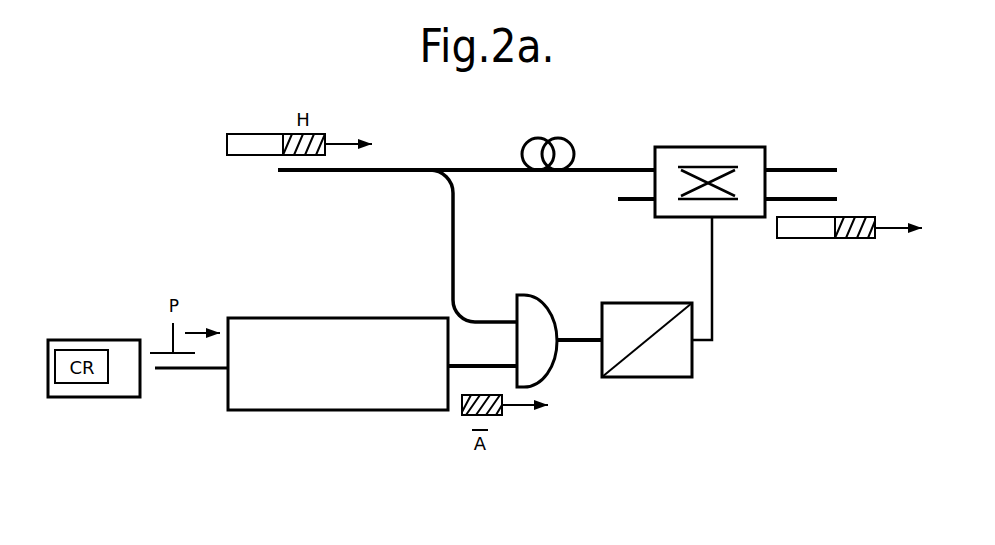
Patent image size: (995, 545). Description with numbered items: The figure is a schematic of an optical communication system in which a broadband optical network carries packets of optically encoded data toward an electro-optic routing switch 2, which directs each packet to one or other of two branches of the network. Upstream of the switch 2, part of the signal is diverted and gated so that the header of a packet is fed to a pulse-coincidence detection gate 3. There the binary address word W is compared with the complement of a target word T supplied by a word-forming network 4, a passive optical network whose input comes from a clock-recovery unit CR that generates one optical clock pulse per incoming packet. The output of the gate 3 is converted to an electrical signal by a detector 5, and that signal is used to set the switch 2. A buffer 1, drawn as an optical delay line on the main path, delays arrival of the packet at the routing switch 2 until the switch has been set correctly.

The buffer 1 is at (565, 137).
The electro-optic routing switch 2 is at (750, 173).
The pulse-coincidence detection gate 3 is at (538, 326).
The word-forming network 4 is at (318, 412).
The detector 5 is at (690, 378).